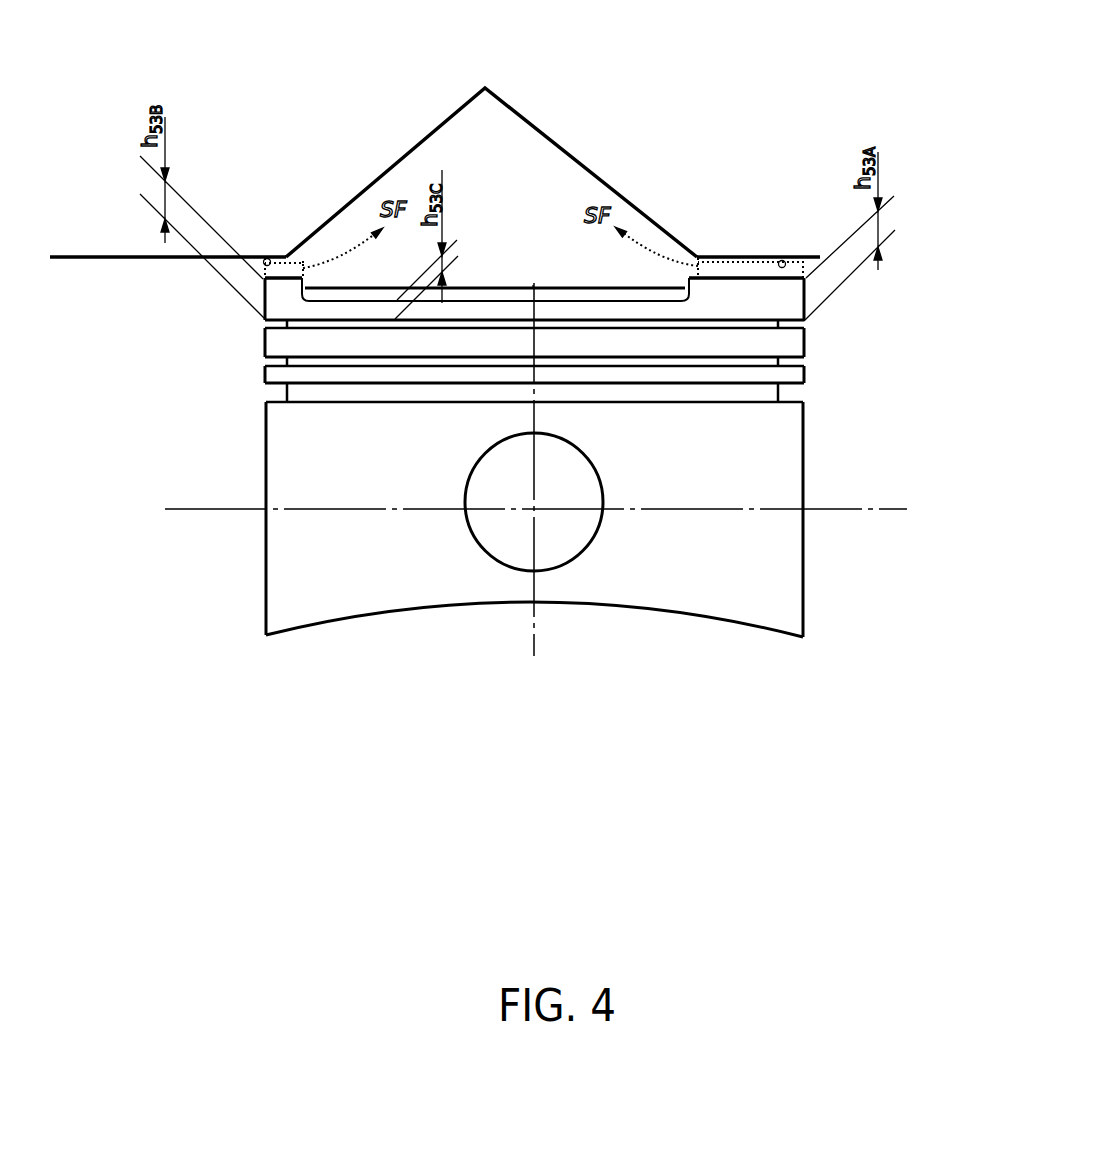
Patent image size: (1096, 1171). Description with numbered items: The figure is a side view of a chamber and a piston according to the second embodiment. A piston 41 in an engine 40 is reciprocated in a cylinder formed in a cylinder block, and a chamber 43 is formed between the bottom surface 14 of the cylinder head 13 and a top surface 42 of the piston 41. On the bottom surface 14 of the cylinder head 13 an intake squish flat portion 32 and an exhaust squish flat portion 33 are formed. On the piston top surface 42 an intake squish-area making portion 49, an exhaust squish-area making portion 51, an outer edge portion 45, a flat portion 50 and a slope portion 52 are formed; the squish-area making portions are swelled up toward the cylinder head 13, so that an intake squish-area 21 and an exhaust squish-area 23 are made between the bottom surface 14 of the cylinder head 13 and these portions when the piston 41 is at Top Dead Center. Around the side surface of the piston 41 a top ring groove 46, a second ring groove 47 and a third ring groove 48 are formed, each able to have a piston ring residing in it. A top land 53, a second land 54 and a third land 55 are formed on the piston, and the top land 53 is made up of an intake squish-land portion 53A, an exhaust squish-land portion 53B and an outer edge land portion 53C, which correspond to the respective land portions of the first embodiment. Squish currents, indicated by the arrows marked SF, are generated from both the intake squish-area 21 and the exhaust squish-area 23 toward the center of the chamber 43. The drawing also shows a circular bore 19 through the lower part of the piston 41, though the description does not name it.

The cylinder head 13 is at (692, 79).
The bottom surface of the cylinder head 14 is at (498, 150).
The piston pin hole 19 is at (483, 555).
The intake squish-area 21 is at (716, 260).
The exhaust squish-area 23 is at (290, 262).
The intake squish flat portion 32 is at (783, 260).
The exhaust squish flat portion 33 is at (268, 258).
The engine 40 is at (223, 843).
The piston 41 is at (266, 645).
The top surface of the piston 42 is at (533, 275).
The chamber 43 is at (557, 165).
The outer edge portion 45 is at (467, 298).
The top ring groove 46 is at (264, 323).
The second ring groove 47 is at (264, 362).
The third ring groove 48 is at (272, 393).
The intake squish-area making portion 49 is at (750, 277).
The flat portion 50 is at (505, 287).
The exhaust squish-area making portion 51 is at (278, 277).
The slope portion 52 is at (560, 299).
The top land 53 is at (260, 295).
The intake squish-land portion 53A is at (692, 292).
The exhaust squish-land portion 53B is at (283, 292).
The outer edge land portion 53C is at (583, 310).
The second land 54 is at (260, 341).
The third land 55 is at (259, 377).